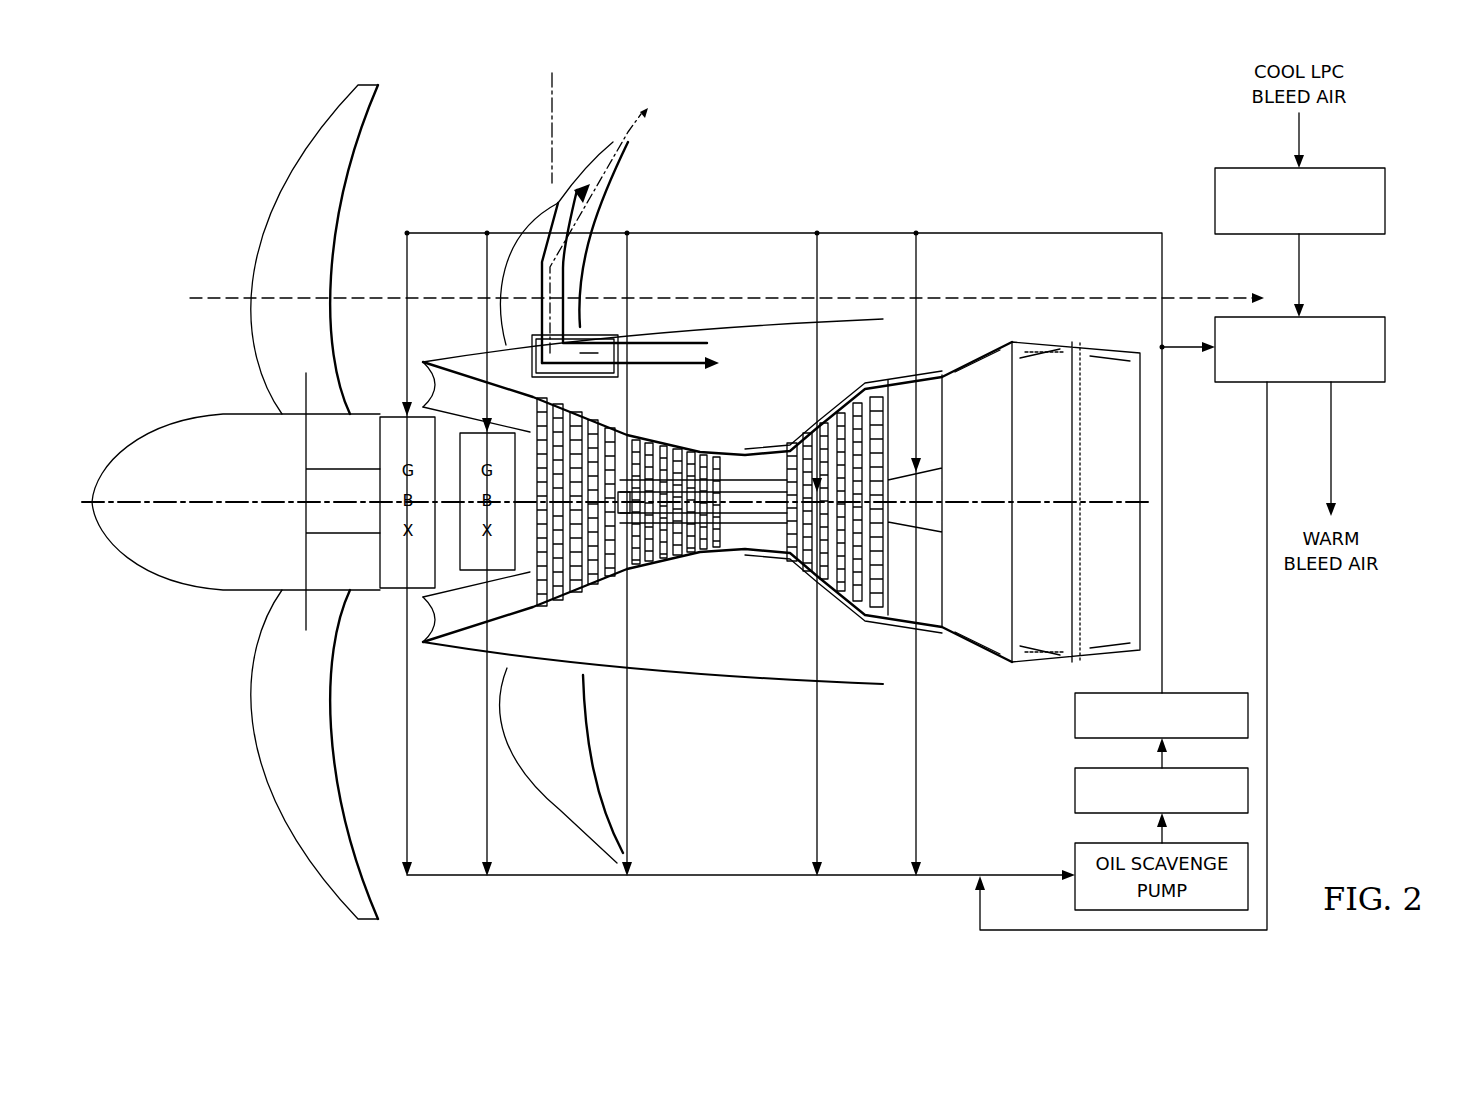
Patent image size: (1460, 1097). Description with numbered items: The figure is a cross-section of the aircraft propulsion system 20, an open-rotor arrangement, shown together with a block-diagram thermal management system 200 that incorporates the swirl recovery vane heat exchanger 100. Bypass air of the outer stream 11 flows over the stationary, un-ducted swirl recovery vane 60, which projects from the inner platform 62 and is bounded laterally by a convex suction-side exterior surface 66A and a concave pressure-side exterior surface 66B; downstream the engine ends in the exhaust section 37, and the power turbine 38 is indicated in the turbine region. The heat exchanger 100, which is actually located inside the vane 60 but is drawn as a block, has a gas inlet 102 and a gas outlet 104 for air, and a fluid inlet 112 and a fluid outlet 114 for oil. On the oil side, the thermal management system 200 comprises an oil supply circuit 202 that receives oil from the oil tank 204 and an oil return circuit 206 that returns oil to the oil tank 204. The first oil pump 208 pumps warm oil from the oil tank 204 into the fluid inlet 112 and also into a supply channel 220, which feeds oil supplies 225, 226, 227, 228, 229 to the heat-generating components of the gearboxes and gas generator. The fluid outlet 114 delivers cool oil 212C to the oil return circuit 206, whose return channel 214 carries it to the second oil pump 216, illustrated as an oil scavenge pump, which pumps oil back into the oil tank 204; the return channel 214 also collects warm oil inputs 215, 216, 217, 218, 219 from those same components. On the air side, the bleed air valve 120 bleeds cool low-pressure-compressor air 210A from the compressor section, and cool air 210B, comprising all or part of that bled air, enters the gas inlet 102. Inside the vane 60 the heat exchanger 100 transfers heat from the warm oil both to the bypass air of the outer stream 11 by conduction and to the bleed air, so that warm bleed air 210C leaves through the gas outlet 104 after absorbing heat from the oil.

The aircraft propulsion system 20 is at (250, 104).
The thermal management system 200 is at (238, 160).
The outer stream 11 is at (762, 298).
The exhaust section 37 is at (1075, 320).
The power turbine 38 is at (972, 668).
The swirl recovery vane 60 is at (597, 140).
The inner platform 62 is at (522, 352).
The first vane exterior surface 66A is at (540, 217).
The second vane exterior surface 66B is at (563, 810).
The swirl recovery vane heat exchanger 100 is at (525, 245).
The gas inlet 102 is at (1305, 314).
The gas outlet 104 is at (1334, 390).
The fluid inlet 112 is at (1212, 360).
The fluid outlet 114 is at (1266, 396).
The bleed air valve 120 is at (1388, 197).
The oil supply circuit 202 is at (868, 216).
The oil tank 204 is at (1073, 791).
The oil return circuit 206 is at (726, 895).
The first oil pump 208 is at (1073, 718).
The cool air 210A is at (1303, 138).
The cool air 210B is at (1297, 277).
The warm LPC bleed air 210C is at (1335, 470).
The cool oil 212C is at (1270, 752).
The return channel 214 is at (945, 872).
The warm oil input 215 is at (405, 697).
The second oil pump 216 is at (485, 770).
The warm oil input 217 is at (630, 770).
The warm oil input 218 is at (820, 770).
The warm oil input 219 is at (918, 770).
The supply channel 220 is at (1165, 558).
The oil supply 225 is at (405, 280).
The oil supply 226 is at (484, 272).
The oil supply 227 is at (630, 280).
The oil supply 228 is at (820, 282).
The oil supply 229 is at (918, 282).